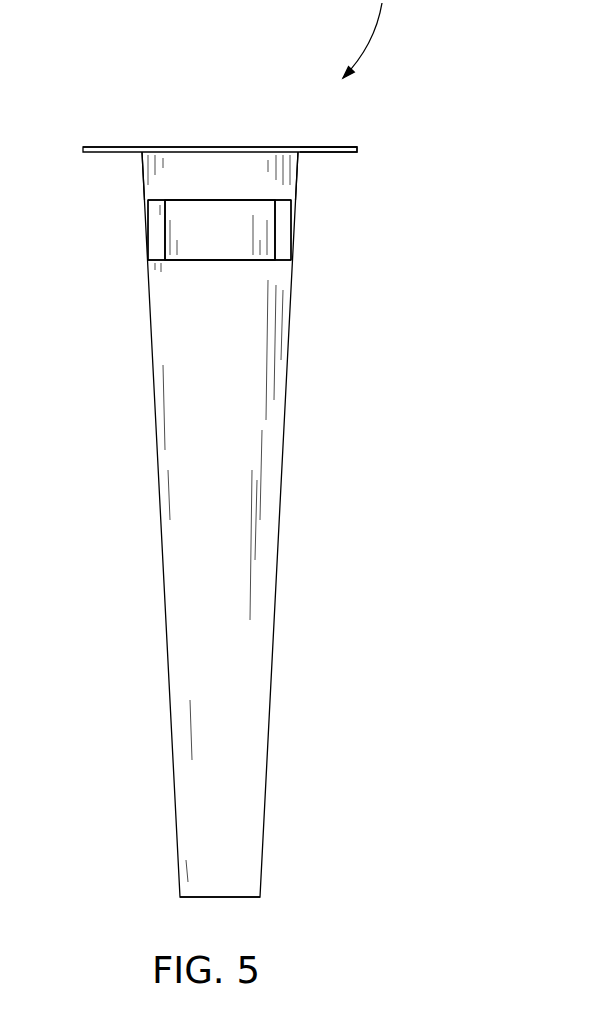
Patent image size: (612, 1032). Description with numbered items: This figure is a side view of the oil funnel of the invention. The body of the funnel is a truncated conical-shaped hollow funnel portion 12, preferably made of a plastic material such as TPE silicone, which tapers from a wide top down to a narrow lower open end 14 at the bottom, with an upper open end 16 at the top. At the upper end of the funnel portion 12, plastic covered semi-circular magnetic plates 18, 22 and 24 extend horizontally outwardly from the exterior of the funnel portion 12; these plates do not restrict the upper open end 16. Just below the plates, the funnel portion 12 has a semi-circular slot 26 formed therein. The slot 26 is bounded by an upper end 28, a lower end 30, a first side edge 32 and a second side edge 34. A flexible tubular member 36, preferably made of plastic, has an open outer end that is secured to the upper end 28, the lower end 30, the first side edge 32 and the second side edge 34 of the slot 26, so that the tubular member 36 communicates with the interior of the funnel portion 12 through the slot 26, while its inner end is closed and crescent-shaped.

The funnel portion 12 is at (163, 520).
The lower open end 14 is at (198, 905).
The upper open end 16 is at (160, 152).
The magnetic plate 18 is at (108, 147).
The magnetic plate 22 is at (333, 147).
The magnetic plate 24 is at (213, 147).
The slot 26 is at (232, 258).
The upper end of slot 28 is at (258, 200).
The lower end of slot 30 is at (245, 260).
The first side edge of slot 32 is at (147, 230).
The second side edge of slot 34 is at (293, 240).
The flexible tubular member 36 is at (192, 237).